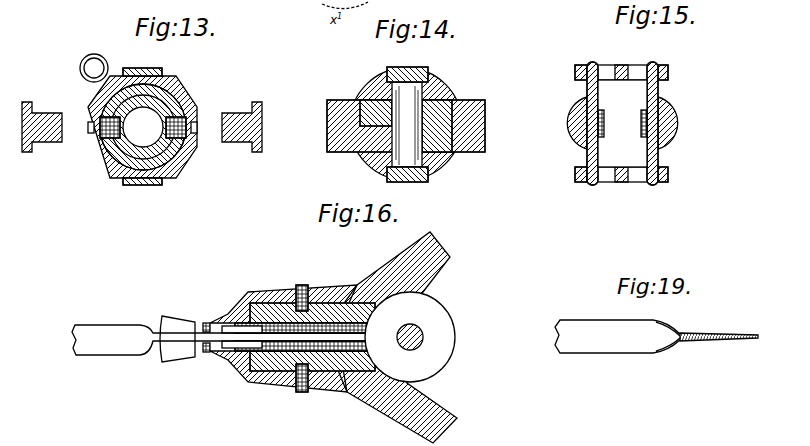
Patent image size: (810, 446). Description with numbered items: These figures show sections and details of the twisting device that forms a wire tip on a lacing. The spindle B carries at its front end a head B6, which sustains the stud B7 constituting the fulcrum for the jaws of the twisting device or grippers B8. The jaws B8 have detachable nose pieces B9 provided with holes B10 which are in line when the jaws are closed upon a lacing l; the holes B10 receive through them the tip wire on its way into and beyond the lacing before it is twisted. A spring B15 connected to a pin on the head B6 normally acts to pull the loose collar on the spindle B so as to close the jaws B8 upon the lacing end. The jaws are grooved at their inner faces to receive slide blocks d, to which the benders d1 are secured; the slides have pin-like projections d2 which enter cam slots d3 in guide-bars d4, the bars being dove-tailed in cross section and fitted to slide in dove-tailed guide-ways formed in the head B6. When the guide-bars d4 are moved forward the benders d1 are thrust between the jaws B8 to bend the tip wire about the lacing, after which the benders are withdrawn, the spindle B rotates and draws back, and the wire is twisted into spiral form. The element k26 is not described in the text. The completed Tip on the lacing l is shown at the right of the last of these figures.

In FIG. 13, the spindle B is at (108, 160).
In FIG. 13, the head B6 is at (190, 97).
In FIG. 14, the head B6 is at (362, 160).
In FIG. 14, the stud B7 is at (408, 128).
In FIG. 16, the stud B7 is at (417, 332).
In FIG. 13, the jaws of the twisting device B8 is at (243, 110).
In FIG. 14, the jaws of the twisting device B8 is at (327, 126).
In FIG. 15, the jaws of the twisting device B8 is at (692, 125).
In FIG. 16, the jaws of the twisting device B8 is at (358, 282).
In FIG. 16, the nose pieces B9 is at (283, 247).
In FIG. 16, the holes B10 is at (208, 322).
In FIG. 13, the spring B15 is at (80, 62).
In FIG. 15, the slide blocks d is at (645, 146).
In FIG. 16, the slide blocks d is at (333, 326).
In FIG. 15, the benders d1 is at (604, 122).
In FIG. 16, the benders d1 is at (232, 318).
In FIG. 15, the pin-like projections d2 is at (592, 62).
In FIG. 15, the cam slots d3 is at (609, 70).
In FIG. 13, the guide-bars d4 is at (147, 68).
In FIG. 14, the guide-bars d4 is at (424, 66).
In FIG. 15, the guide-bars d4 is at (668, 74).
In FIG. 16, the wedge plug k26 is at (158, 358).
In FIG. 16, the lacing l is at (100, 331).
In FIG. 19, the lacing l is at (580, 325).
In FIG. 19, the tip Tip is at (719, 325).